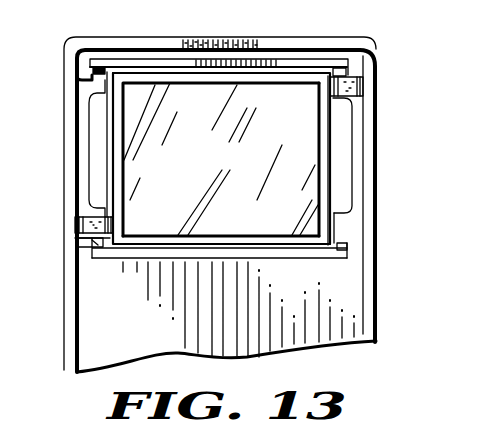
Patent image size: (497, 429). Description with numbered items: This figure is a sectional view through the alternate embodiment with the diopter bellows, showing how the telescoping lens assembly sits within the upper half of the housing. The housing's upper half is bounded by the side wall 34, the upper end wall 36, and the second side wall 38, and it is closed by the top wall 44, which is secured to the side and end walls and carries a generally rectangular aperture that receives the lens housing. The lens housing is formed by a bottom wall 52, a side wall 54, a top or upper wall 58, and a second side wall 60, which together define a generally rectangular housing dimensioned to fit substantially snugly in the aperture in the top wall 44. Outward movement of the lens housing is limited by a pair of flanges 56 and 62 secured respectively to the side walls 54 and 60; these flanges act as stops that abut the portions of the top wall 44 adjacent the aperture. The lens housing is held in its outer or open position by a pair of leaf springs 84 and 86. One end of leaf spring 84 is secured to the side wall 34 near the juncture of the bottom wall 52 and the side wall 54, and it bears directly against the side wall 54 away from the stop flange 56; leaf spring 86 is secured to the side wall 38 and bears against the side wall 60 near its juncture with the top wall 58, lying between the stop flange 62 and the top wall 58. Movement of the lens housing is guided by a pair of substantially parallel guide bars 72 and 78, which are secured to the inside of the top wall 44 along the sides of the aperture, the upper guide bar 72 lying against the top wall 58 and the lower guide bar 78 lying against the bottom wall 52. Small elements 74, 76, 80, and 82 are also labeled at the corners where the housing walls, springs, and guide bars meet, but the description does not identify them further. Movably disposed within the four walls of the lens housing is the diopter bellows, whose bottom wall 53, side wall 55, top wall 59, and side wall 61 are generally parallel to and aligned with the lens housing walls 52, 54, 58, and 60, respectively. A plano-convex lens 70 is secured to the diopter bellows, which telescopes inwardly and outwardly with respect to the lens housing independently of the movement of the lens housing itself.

The side wall 34 is at (66, 332).
The upper end wall 36 is at (152, 42).
The second side wall 38 is at (367, 238).
The top wall 44 is at (367, 318).
The bottom wall 52 is at (207, 247).
The bottom wall 53 is at (243, 238).
The side wall 54 is at (110, 85).
The side wall 55 is at (118, 164).
The flange 56 is at (100, 153).
The top wall 58 is at (271, 69).
The top wall 59 is at (260, 74).
The second side wall 60 is at (338, 224).
The side wall 61 is at (320, 203).
The flange 62 is at (337, 138).
The plano-convex lens 70 is at (238, 166).
The guide bar 72 is at (123, 62).
The retaining hook 74 is at (76, 72).
The retainer block 76 is at (355, 68).
The guide bar 78 is at (163, 262).
The lower clip 80 is at (88, 243).
The lower right clip 82 is at (346, 245).
The leaf spring 84 is at (78, 207).
The leaf spring 86 is at (358, 88).